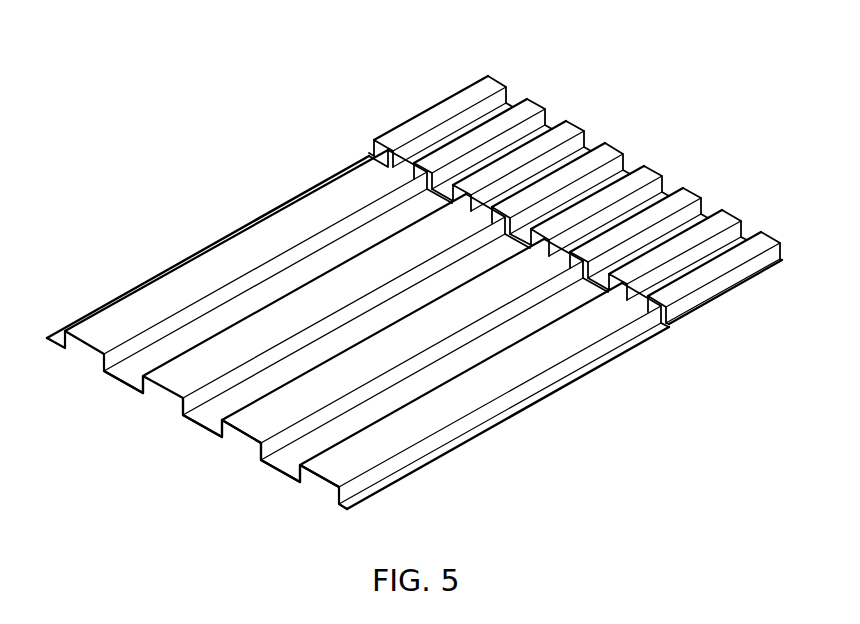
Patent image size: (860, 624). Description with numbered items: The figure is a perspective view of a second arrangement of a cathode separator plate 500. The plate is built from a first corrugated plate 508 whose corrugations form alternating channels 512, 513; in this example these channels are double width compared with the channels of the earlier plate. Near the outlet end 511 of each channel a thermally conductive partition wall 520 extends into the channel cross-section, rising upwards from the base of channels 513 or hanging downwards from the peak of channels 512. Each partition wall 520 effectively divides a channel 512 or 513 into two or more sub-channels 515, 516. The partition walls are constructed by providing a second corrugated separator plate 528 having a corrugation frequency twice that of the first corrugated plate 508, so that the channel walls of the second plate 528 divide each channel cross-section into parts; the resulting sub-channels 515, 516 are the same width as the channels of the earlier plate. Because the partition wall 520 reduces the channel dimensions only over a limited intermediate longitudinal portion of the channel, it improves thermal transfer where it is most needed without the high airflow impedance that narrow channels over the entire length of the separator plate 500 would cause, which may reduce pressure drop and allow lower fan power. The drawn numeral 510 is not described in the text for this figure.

The separator plate 500 is at (414, 281).
The first corrugated plate 508 is at (270, 240).
The base web between ribs 510 is at (116, 383).
The outlet end 511 is at (558, 160).
The channel 512 is at (167, 400).
The channel 513 is at (210, 418).
The sub-channel 515 is at (618, 287).
The sub-channel 516 is at (597, 275).
The partition wall 520 is at (433, 193).
The second corrugated separator plate 528 is at (450, 110).